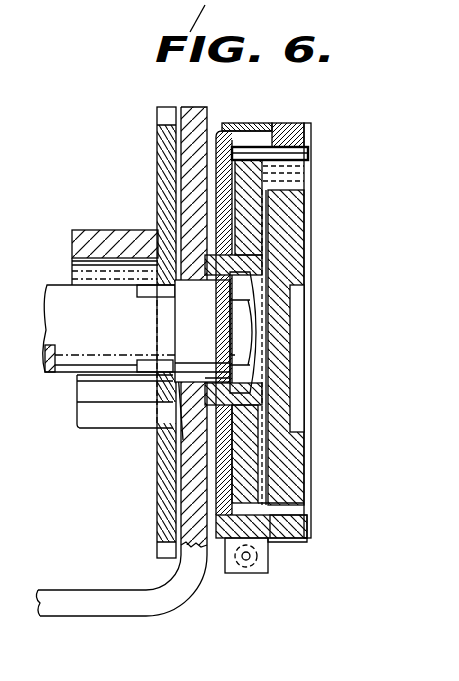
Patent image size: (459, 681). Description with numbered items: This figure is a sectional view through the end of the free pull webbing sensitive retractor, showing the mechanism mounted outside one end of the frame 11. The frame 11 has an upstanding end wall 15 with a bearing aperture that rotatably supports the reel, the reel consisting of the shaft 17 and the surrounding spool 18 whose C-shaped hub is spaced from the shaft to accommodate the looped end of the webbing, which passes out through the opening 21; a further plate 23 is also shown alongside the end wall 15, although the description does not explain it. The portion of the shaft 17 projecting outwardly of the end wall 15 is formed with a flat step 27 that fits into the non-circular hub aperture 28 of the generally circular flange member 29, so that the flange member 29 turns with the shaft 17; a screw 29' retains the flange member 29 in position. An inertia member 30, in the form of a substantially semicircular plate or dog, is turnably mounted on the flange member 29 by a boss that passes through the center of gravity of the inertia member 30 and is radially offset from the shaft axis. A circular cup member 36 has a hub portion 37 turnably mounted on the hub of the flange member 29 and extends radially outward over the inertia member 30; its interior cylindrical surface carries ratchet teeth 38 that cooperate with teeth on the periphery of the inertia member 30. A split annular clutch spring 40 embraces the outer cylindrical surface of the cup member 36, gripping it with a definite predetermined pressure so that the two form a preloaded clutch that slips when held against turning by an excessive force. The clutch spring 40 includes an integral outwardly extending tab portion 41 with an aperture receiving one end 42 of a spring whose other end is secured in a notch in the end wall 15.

The frame 11 is at (88, 620).
The end wall 15 is at (193, 110).
The shaft 17 is at (139, 328).
The spool 18 is at (113, 238).
The opening 21 is at (97, 415).
The plate 23 is at (165, 143).
The flat step 27 is at (155, 292).
The hub aperture 28 is at (263, 260).
The flange member 29 is at (264, 177).
The screw 29' is at (289, 332).
The inertia member 30 is at (292, 212).
The cup member 36 is at (288, 530).
The hub portion 37 is at (182, 438).
The ratchet teeth 38 is at (227, 447).
The clutch spring 40 is at (268, 127).
The tab portion 41 is at (262, 572).
The end of spring 42 is at (246, 556).